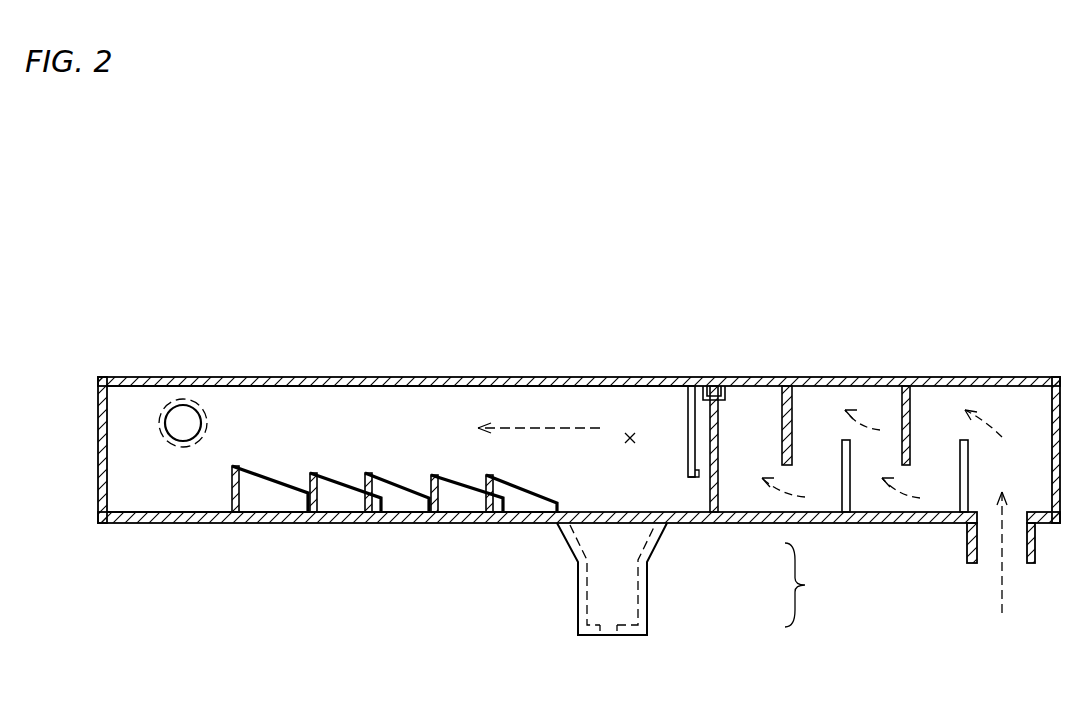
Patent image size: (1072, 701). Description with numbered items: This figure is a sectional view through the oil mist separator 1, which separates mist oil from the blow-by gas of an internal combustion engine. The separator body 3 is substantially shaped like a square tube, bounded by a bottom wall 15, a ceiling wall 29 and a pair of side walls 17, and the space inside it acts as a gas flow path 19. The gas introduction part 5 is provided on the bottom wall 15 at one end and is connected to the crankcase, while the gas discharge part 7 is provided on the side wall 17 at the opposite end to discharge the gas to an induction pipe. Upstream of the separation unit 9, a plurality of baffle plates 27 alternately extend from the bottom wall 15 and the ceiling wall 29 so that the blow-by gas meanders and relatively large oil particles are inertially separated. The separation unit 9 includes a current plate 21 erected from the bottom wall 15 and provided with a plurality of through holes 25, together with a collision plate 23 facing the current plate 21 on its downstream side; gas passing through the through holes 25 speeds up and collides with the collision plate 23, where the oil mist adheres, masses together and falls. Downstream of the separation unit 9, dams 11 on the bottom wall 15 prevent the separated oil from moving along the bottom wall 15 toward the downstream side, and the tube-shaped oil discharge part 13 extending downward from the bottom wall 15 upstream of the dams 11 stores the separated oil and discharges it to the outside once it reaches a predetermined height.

The oil mist separator 1 is at (1004, 229).
The separator body 3 is at (548, 377).
The gas introduction part 5 is at (1013, 550).
The gas discharge part 7 is at (183, 412).
The separation unit 9 is at (807, 585).
The dams 11 is at (275, 502).
The oil discharge part 13 is at (622, 595).
The bottom wall 15 is at (186, 505).
The side walls 17 is at (378, 422).
The gas flow path 19 is at (630, 436).
The current plate 21 is at (716, 470).
The collision plate 23 is at (702, 480).
The through holes 25 is at (722, 396).
The baffle plates 27 is at (785, 395).
The ceiling wall 29 is at (270, 380).